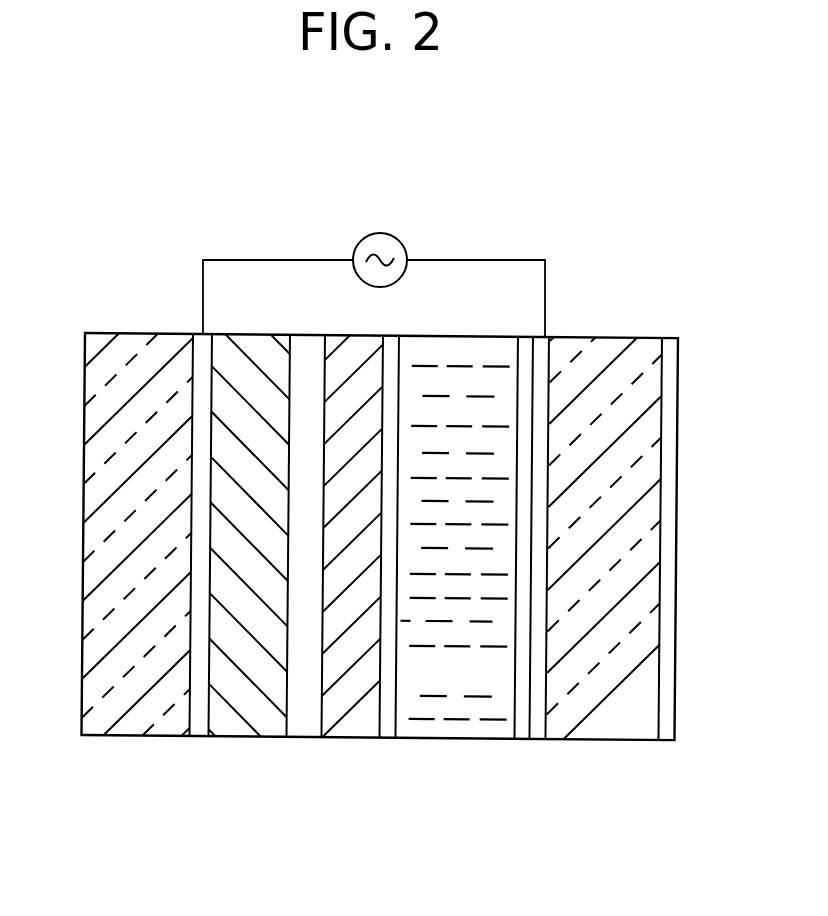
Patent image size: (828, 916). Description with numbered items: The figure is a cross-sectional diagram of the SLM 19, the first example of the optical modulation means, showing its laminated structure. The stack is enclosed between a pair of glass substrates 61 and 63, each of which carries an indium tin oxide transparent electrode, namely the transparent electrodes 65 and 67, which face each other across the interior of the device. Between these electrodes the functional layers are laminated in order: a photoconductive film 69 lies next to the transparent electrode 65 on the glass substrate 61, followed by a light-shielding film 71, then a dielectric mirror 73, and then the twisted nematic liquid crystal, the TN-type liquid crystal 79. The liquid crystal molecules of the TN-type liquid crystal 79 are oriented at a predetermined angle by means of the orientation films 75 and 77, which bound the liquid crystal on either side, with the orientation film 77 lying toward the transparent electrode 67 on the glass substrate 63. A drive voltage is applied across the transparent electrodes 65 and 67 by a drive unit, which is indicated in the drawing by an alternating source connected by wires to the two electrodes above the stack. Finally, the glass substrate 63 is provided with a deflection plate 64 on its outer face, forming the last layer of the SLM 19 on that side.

The SLM 19 is at (139, 200).
The glass substrate 61 is at (112, 737).
The transparent electrode 65 is at (195, 737).
The photoconductive film 69 is at (255, 737).
The light-shielding film 71 is at (302, 737).
The dielectric mirror 73 is at (353, 737).
The orientation film 75 is at (390, 737).
The TN-type liquid crystal 79 is at (457, 737).
The orientation film 77 is at (522, 737).
The transparent electrode 67 is at (538, 737).
The glass substrate 63 is at (610, 738).
The deflection plate 64 is at (663, 738).